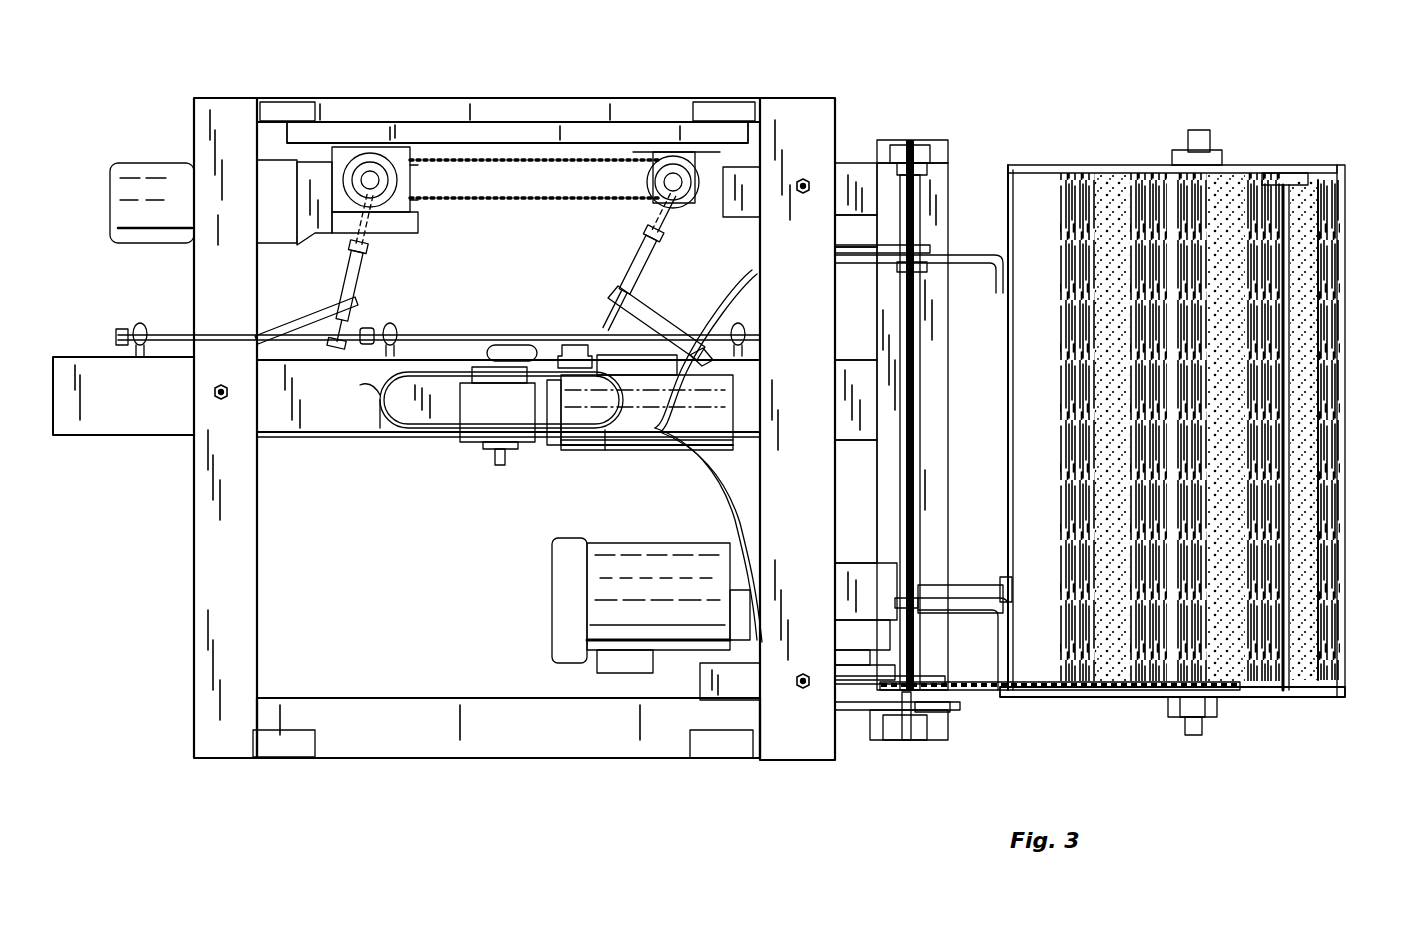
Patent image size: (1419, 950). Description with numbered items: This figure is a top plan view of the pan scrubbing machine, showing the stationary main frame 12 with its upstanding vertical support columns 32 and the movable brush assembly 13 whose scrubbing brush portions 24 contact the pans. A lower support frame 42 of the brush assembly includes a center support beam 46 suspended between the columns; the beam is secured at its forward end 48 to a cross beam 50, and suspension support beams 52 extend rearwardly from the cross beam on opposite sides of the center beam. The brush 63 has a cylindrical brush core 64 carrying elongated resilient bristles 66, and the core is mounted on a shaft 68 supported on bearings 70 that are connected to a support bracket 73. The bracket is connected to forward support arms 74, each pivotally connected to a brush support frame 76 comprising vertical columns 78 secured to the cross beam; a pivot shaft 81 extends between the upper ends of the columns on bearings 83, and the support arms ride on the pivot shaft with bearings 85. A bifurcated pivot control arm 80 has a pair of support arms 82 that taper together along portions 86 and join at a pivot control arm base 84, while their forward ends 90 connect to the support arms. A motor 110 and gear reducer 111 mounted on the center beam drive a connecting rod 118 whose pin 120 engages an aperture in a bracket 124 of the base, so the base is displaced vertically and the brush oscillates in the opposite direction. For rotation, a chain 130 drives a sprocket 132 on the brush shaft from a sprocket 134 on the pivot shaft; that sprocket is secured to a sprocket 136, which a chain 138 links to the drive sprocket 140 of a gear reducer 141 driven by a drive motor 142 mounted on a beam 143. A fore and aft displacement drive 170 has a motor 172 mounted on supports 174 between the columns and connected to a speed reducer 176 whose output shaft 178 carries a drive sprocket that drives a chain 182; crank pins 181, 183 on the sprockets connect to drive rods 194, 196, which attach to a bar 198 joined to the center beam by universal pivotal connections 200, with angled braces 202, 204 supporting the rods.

The main stationary frame 12 is at (790, 68).
The movable brush assembly 13 is at (1278, 148).
The scrubbing brush portions 24 is at (1350, 250).
The vertical support columns 32 is at (292, 105).
The lower support frame 42 is at (405, 440).
The center support beam 46 is at (345, 442).
The forward end 48 is at (862, 352).
The cross beam 50 is at (950, 308).
The suspension support beams 52 is at (855, 165).
The brush 63 is at (1352, 178).
The cylindrical brush core 64 is at (1170, 205).
The elongated resilient bristles 66 is at (1045, 210).
The shaft 68 is at (1198, 130).
The bearings 70 is at (1220, 158).
The support bracket 73 is at (1012, 352).
The forward support arms 74 is at (960, 253).
The brush support frame 76 is at (915, 135).
The vertical columns 78 is at (905, 145).
The pivot control arm 80 is at (665, 455).
The pivot shaft 81 is at (915, 365).
The support arms 82 is at (740, 286).
The bearings 83 is at (920, 172).
The pivot control arm base 84 is at (603, 452).
The bearings 85 is at (928, 270).
The tapering portions 86 is at (725, 342).
The forward ends 90 is at (845, 250).
The motor 110 is at (575, 340).
The gear reducer 111 is at (470, 405).
The connecting rod 118 is at (495, 345).
The pin 120 is at (568, 345).
The bracket 124 is at (372, 380).
The chain 130 is at (1098, 697).
The sprocket 132 is at (1170, 700).
The sprocket 134 is at (918, 655).
The sprocket 136 is at (908, 745).
The chain 138 is at (840, 668).
The drive sprocket 140 is at (845, 712).
The gear reducer 141 is at (862, 580).
The drive motor 142 is at (565, 597).
The beam 143 is at (965, 585).
The lateral displacement drive 170 is at (185, 148).
The motor 172 is at (128, 163).
The supports 174 is at (360, 135).
The speed reducer 176 is at (320, 245).
The output shaft 178 is at (358, 172).
The crank pin 181 is at (410, 212).
The chain 182 is at (522, 200).
The crank pin 183 is at (680, 208).
The drive rod 194 is at (630, 262).
The drive rod 196 is at (370, 270).
The bar 198 is at (440, 335).
The pivotal connections 200 is at (140, 323).
The angled brace 202 is at (255, 330).
The angled brace 204 is at (632, 302).